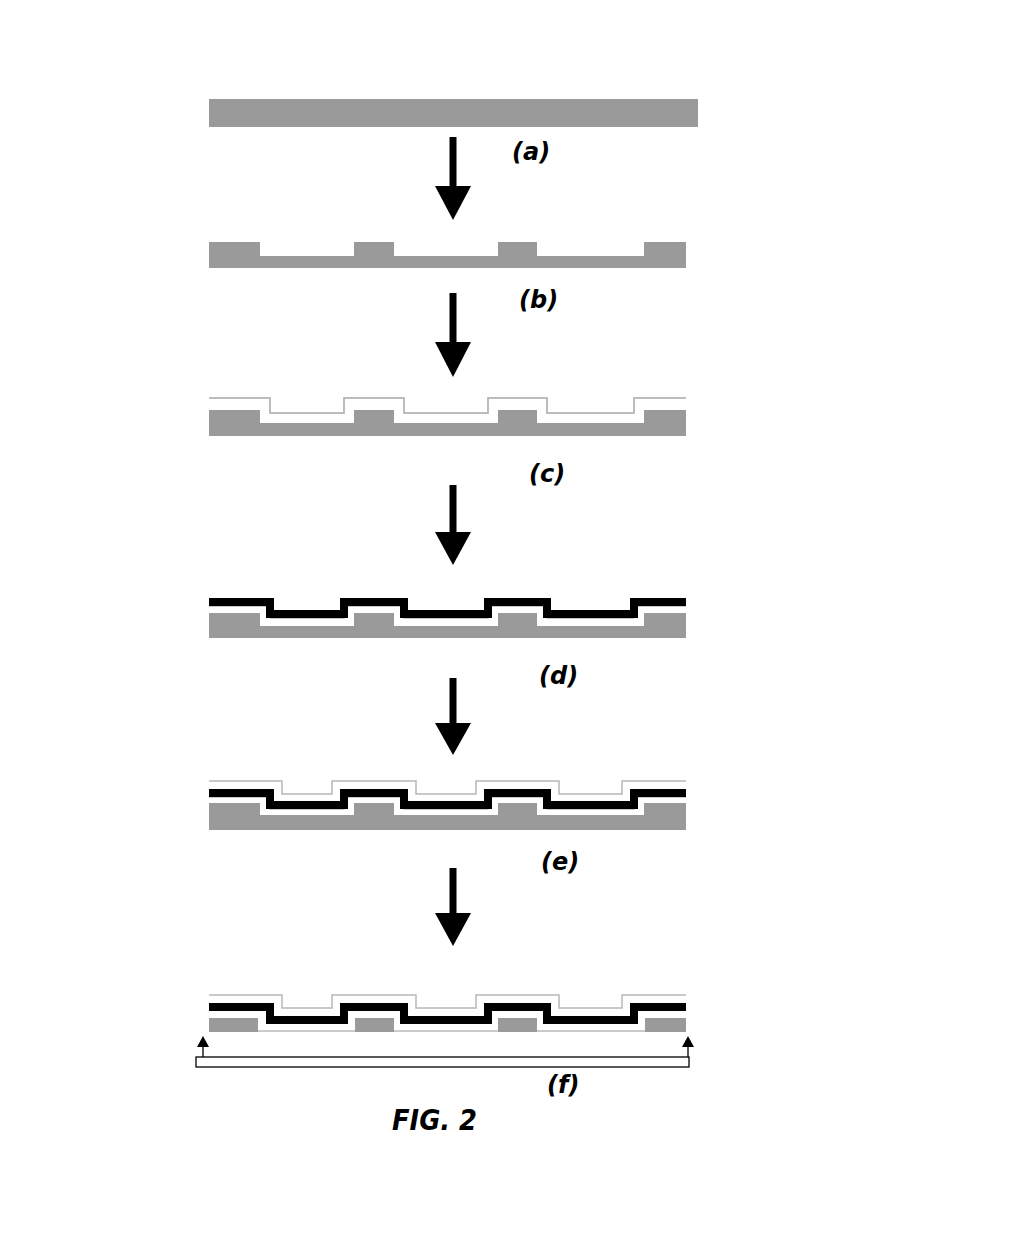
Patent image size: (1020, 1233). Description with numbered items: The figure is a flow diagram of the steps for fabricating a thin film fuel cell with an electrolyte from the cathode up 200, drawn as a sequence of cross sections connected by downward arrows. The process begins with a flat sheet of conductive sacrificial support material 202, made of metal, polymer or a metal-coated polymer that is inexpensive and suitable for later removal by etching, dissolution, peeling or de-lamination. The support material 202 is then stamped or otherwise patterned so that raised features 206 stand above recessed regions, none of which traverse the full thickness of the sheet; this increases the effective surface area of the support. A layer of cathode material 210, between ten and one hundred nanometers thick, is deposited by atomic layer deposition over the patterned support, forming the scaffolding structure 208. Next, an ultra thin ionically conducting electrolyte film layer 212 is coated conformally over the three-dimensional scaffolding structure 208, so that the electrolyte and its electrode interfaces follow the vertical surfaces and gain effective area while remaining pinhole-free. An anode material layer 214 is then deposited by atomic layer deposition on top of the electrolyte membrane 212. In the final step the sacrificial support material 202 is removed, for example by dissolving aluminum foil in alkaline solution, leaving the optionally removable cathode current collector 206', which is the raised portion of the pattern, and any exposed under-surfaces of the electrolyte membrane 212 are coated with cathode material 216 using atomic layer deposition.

The thin film fuel cell fabrication process from the cathode up 200 is at (731, 62).
The conductive sacrificial support material 202 is at (698, 106).
The raised features 206 is at (551, 505).
The cathode current collector 206' is at (447, 980).
The scaffolding structure 208 is at (180, 419).
The cathode material layer 210 is at (662, 398).
The electrolyte film layer 212 is at (661, 598).
The anode material layer 214 is at (572, 793).
The cathode material 216 is at (690, 1062).